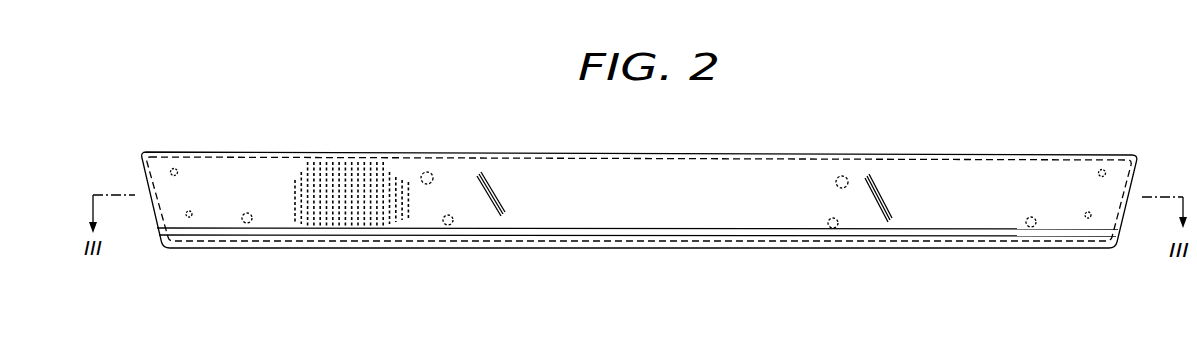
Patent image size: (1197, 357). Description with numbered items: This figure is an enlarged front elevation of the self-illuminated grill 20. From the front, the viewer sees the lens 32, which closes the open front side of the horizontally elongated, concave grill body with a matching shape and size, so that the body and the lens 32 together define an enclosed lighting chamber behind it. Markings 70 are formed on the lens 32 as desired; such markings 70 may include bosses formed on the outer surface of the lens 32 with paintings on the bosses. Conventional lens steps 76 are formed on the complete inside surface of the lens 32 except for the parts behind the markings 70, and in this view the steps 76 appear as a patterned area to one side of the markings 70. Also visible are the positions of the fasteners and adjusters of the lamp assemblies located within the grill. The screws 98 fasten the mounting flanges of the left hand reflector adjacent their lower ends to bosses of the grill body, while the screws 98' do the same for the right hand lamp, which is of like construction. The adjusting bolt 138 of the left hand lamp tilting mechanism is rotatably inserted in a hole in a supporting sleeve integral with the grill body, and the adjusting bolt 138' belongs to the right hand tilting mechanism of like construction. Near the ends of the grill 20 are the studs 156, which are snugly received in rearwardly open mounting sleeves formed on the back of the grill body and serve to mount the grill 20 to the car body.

The self-illuminated grill 20 is at (928, 130).
The lens 32 is at (683, 158).
The markings 70 is at (555, 184).
The lens steps 76 is at (333, 163).
The adjusting bolt 138 is at (450, 142).
The adjusting bolt 138' is at (841, 143).
The screws 98 is at (352, 253).
The screws 98' is at (934, 254).
The studs 156 is at (175, 168).